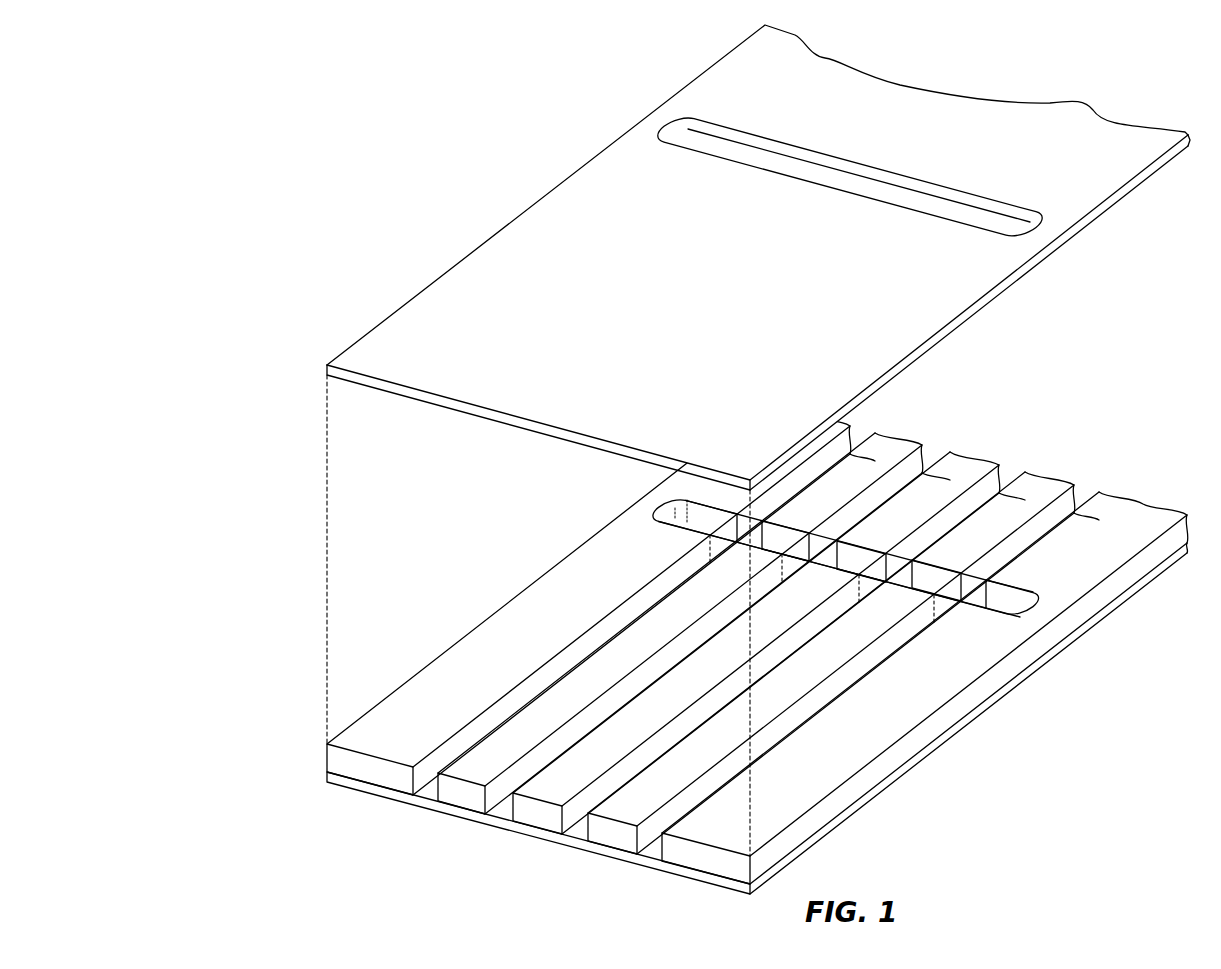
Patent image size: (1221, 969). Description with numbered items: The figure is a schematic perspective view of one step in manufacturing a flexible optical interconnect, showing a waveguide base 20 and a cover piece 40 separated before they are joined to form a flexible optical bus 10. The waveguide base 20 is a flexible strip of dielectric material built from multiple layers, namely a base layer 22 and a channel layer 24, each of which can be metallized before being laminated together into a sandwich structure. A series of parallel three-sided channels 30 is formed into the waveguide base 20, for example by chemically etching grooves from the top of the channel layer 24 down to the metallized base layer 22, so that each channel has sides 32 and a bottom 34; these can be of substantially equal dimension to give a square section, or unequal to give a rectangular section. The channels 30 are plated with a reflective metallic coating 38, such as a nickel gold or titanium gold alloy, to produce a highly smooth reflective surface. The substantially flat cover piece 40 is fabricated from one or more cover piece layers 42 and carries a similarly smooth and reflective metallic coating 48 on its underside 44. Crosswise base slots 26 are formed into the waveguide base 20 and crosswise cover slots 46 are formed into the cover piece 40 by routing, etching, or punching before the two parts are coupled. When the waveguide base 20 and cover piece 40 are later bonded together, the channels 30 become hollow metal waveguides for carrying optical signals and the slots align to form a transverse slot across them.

The flexible optical bus 10 is at (242, 298).
The waveguide base 20 is at (300, 765).
The base layer 22 is at (840, 823).
The channel layer 24 is at (998, 672).
The crosswise base slots 26 is at (1020, 578).
The channels 30 is at (505, 796).
The sides 32 is at (797, 713).
The bottoms 34 is at (652, 850).
The reflective metallic coating 38 is at (630, 606).
The cover piece 40 is at (495, 198).
The cover piece layers 42 is at (1122, 190).
The underside 44 is at (1018, 278).
The crosswise cover slots 46 is at (662, 125).
The metallic coating 48 is at (1080, 233).